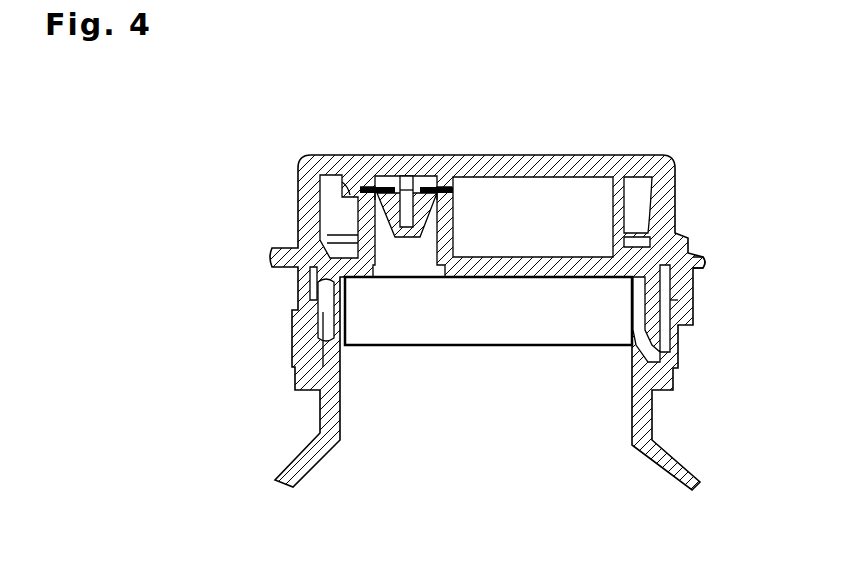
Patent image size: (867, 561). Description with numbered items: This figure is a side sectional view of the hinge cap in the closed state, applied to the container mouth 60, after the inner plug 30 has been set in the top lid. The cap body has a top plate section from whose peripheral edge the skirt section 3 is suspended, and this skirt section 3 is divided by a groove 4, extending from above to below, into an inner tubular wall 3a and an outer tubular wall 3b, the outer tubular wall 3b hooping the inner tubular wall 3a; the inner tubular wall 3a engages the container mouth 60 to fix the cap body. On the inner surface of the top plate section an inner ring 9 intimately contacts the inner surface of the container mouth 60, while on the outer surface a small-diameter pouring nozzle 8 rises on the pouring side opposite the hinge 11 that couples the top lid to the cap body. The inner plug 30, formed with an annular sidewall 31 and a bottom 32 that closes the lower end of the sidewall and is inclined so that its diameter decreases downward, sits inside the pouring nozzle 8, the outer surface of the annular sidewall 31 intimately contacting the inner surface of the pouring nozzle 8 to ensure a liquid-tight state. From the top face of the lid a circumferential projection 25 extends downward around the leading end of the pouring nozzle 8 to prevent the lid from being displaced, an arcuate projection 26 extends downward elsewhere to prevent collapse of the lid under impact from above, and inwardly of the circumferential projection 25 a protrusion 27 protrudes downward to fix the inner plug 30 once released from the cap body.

The skirt section 3 is at (752, 290).
The inner tubular wall 3a is at (678, 303).
The outer tubular wall 3b is at (683, 326).
The groove 4 is at (678, 348).
The pouring nozzle 8 is at (457, 232).
The inner ring 9 is at (632, 310).
The hinge 11 is at (712, 262).
The circumferential projection 25 is at (340, 188).
The arcuate projection 26 is at (624, 200).
The protrusion 27 is at (430, 178).
The inner plug 30 is at (424, 246).
The annular sidewall 31 is at (384, 216).
The bottom 32 is at (393, 245).
The container mouth 60 is at (293, 455).